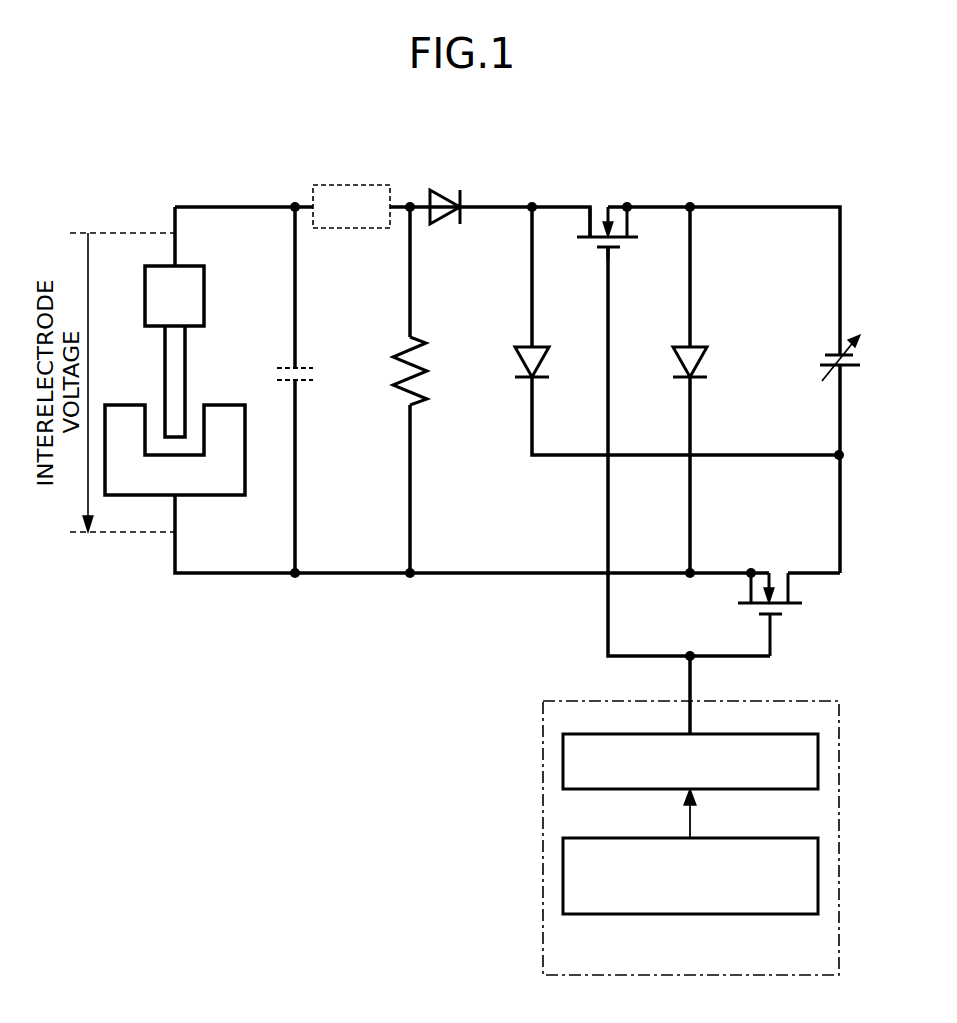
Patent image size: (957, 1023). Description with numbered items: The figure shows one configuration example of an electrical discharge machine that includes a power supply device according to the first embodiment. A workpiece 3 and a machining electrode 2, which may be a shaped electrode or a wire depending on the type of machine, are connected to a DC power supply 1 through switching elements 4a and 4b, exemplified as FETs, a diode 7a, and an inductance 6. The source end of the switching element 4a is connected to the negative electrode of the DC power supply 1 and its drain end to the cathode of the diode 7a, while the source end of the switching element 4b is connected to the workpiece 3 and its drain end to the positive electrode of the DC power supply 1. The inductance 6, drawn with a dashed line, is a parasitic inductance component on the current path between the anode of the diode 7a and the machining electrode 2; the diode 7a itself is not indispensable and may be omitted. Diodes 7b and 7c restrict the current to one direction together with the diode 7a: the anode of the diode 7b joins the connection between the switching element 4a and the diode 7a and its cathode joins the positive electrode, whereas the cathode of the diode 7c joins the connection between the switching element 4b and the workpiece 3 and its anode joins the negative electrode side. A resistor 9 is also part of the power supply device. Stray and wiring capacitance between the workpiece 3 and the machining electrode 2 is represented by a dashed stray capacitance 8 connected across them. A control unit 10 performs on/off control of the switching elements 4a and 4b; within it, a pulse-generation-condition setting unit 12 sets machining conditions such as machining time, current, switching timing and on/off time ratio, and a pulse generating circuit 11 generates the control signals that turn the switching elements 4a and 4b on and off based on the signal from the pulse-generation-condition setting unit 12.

The DC power supply 1 is at (835, 352).
The machining electrode 2 is at (190, 266).
The workpiece 3 is at (215, 497).
The switching element 4a is at (598, 236).
The switching element 4b is at (795, 605).
The inductance 6 is at (352, 185).
The diode 7a is at (452, 205).
The diode 7b is at (542, 346).
The diode 7c is at (682, 346).
The stray capacitance 8 is at (306, 366).
The resistor 9 is at (405, 350).
The control unit 10 is at (778, 700).
The pulse generating circuit 11 is at (818, 760).
The pulse-generation-condition setting unit 12 is at (818, 874).